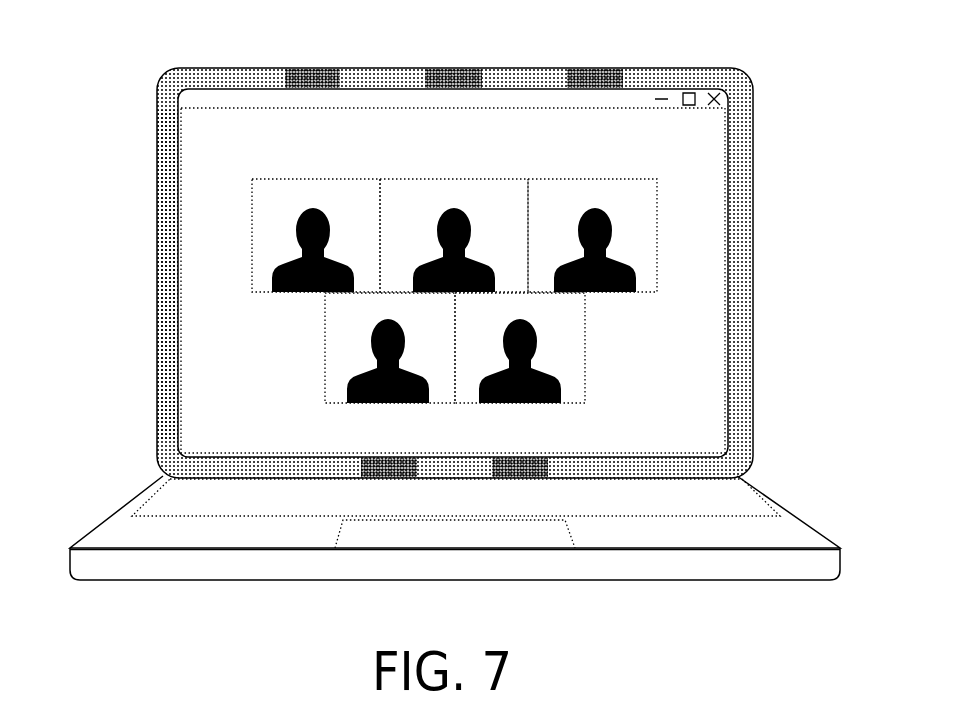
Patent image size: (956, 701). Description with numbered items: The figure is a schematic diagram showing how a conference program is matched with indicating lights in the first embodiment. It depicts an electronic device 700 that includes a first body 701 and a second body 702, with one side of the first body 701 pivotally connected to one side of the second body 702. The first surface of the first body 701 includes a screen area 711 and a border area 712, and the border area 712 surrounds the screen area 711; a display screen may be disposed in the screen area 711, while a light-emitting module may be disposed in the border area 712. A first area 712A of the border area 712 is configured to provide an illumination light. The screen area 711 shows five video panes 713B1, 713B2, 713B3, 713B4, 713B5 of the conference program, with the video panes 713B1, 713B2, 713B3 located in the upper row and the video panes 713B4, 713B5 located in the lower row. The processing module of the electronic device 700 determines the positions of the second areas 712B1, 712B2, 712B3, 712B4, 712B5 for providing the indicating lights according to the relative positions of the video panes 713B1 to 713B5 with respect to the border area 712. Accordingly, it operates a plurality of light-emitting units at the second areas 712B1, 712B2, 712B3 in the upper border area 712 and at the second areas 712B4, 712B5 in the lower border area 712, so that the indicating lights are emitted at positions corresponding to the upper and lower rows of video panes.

The electronic device 700 is at (437, 325).
The first body 701 is at (440, 325).
The second body 702 is at (134, 488).
The screen area 711 is at (510, 273).
The border area 712 is at (455, 325).
The first area 712A is at (172, 127).
The second area 712B1 is at (311, 80).
The second area 712B2 is at (452, 80).
The second area 712B3 is at (595, 80).
The second area 712B4 is at (385, 463).
The second area 712B5 is at (522, 463).
The video pane 713B1 is at (305, 180).
The video pane 713B2 is at (438, 180).
The video pane 713B3 is at (575, 180).
The video pane 713B4 is at (326, 353).
The video pane 713B5 is at (585, 353).